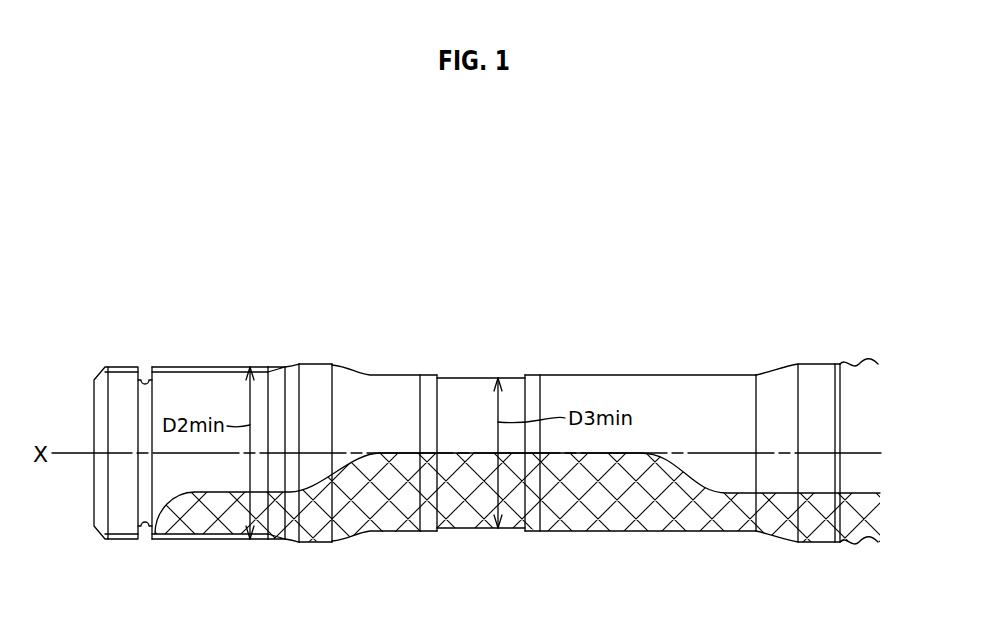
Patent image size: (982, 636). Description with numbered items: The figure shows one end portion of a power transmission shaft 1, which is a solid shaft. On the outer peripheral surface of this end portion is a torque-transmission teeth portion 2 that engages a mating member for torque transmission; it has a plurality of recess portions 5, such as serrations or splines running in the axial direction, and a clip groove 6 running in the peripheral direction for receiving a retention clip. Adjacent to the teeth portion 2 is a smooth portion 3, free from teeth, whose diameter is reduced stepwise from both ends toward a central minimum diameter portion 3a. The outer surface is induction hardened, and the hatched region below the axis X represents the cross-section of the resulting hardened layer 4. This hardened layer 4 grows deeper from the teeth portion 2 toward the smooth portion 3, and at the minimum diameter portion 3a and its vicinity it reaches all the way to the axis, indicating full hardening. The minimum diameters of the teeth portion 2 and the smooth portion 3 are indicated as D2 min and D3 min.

The power transmission shaft 1 is at (456, 231).
The torque-transmission teeth portion 2 is at (287, 345).
The smooth portion 3 is at (835, 335).
The minimum diameter portion 3a is at (525, 377).
The hardened layer 4 is at (386, 520).
The recess portions 5 is at (213, 367).
The clip groove 6 is at (143, 528).